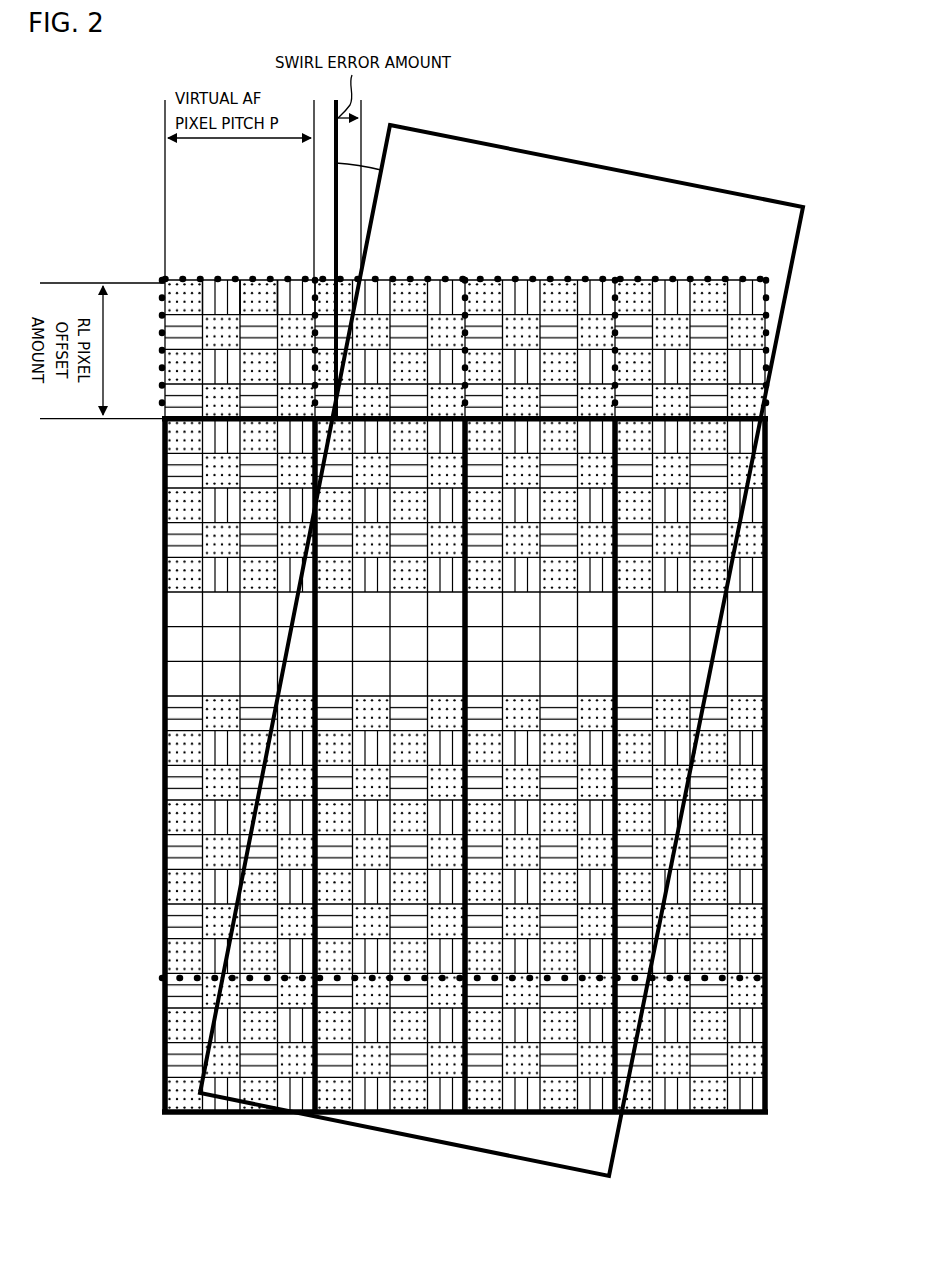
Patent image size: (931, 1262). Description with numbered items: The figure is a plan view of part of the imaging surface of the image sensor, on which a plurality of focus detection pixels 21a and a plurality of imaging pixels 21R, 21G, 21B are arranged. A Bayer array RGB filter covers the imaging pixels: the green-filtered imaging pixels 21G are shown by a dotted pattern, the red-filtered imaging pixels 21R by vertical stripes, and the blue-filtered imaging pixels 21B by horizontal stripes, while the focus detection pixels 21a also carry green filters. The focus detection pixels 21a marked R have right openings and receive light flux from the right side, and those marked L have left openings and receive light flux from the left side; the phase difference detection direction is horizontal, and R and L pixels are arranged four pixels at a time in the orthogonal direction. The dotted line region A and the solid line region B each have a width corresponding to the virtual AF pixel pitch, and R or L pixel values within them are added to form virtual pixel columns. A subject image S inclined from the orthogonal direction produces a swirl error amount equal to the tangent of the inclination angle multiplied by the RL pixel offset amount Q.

The focus detection pixel 21a is at (165, 280).
The imaging pixel 21R is at (203, 280).
The imaging pixel 21G is at (258, 318).
The imaging pixel 21B is at (268, 282).
The dotted line region A is at (163, 292).
The solid line region B is at (162, 1010).
The subject image S is at (642, 176).
The RL pixel offset amount Q is at (104, 350).